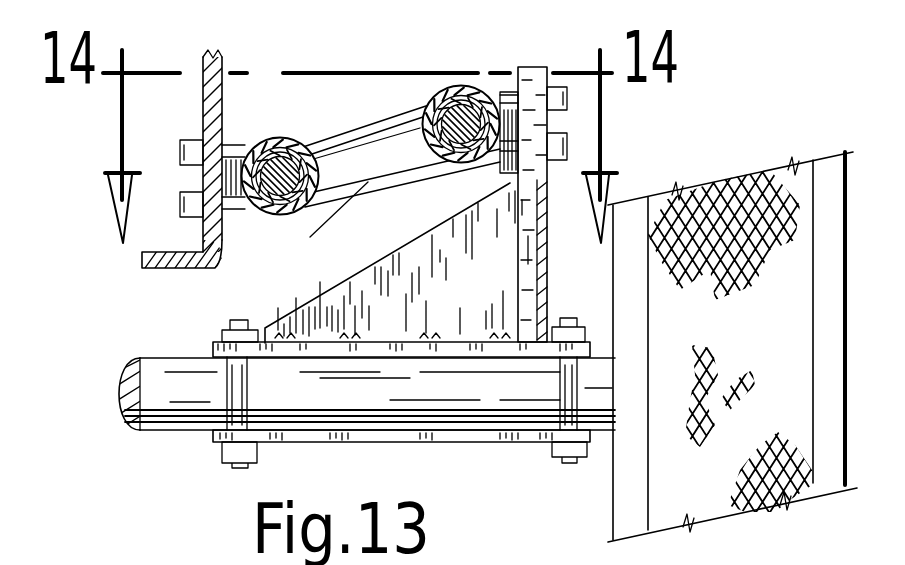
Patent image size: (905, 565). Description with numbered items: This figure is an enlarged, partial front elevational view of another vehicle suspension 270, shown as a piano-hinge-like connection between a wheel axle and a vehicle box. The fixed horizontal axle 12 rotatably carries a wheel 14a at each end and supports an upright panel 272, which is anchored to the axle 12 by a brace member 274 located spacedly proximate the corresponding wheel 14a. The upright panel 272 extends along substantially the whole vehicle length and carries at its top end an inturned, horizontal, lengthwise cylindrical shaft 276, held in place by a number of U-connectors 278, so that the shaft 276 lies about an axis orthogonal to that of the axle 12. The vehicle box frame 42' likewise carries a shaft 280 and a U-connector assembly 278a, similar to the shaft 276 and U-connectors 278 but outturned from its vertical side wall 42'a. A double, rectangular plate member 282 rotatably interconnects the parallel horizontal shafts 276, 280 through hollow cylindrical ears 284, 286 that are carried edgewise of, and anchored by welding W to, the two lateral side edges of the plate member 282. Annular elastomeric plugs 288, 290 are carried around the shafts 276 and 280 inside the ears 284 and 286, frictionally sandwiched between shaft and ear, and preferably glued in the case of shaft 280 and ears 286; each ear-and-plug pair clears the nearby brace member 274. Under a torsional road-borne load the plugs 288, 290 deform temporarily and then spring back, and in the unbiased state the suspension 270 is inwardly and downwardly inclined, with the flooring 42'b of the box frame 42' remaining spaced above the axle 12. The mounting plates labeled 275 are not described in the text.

The fixed horizontal axle 12 is at (170, 392).
The wheel 14a is at (668, 477).
The vehicle box frame 42' is at (192, 126).
The vertical side wall 42'a is at (174, 148).
The flooring 42'b is at (165, 279).
The vehicle suspension 270 is at (370, 100).
The upright panel 272 is at (540, 118).
The brace member 274 is at (433, 287).
The clamp plates 275 is at (278, 433).
The cylindrical shaft 276 is at (500, 92).
The U-connector 278 is at (546, 68).
The U-connector assembly 278a is at (182, 143).
The shaft 280 is at (333, 141).
The double rectangular plate member 282 is at (394, 158).
The hollow cylindrical ear 284 is at (258, 137).
The hollow cylindrical ear 286 is at (437, 86).
The annular elastomeric plug 288 is at (300, 147).
The annular elastomeric plug 290 is at (474, 83).
The welding W is at (330, 204).